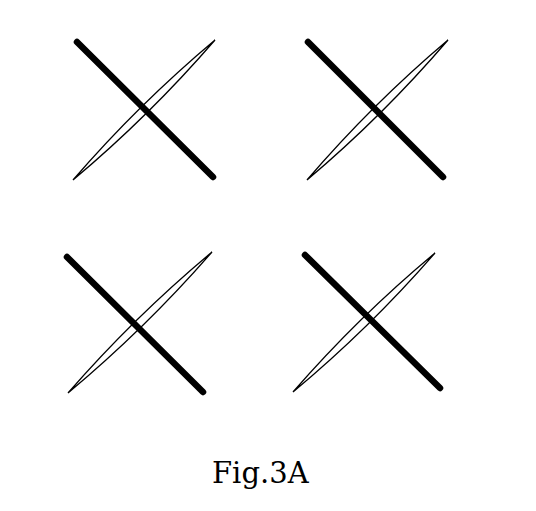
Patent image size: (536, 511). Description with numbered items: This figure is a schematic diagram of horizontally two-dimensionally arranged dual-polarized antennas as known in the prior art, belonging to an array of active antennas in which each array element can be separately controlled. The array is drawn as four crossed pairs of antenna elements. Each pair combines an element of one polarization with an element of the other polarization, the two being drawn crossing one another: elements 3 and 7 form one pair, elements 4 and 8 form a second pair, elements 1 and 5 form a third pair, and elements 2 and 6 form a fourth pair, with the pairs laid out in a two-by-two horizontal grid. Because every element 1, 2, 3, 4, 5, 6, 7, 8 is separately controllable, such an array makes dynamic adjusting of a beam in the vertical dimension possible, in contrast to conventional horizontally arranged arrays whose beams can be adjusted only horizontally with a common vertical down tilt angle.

The first elongated element (lens-shaped) 1 is at (137, 340).
The second elongated element (lens-shaped) 2 is at (361, 340).
The third elongated element (lens-shaped) 3 is at (140, 128).
The fourth elongated element (lens-shaped) 4 is at (374, 128).
The fifth elongated element (thick bar) 5 is at (139, 342).
The sixth elongated element (thick bar) 6 is at (378, 341).
The seventh elongated element (thick bar) 7 is at (149, 129).
The eighth elongated element (thick bar) 8 is at (379, 129).